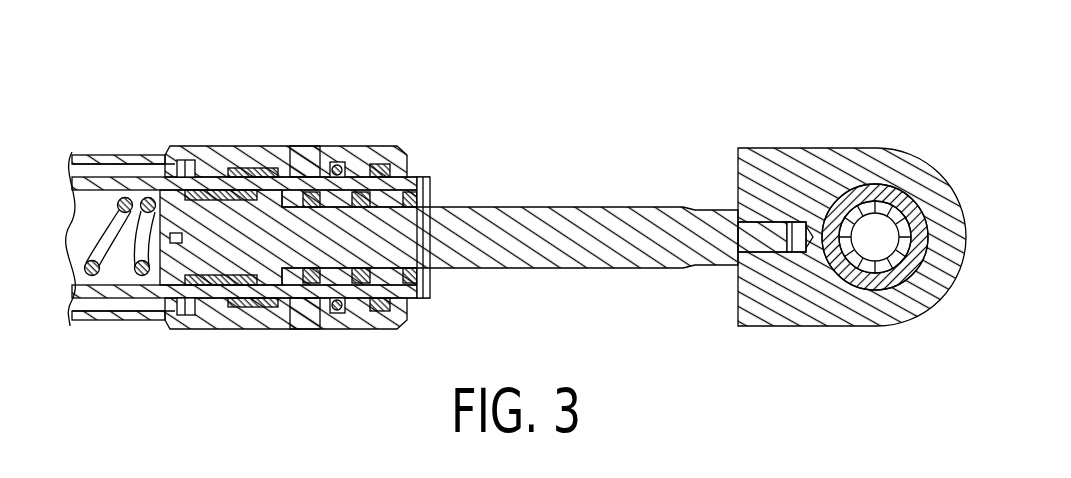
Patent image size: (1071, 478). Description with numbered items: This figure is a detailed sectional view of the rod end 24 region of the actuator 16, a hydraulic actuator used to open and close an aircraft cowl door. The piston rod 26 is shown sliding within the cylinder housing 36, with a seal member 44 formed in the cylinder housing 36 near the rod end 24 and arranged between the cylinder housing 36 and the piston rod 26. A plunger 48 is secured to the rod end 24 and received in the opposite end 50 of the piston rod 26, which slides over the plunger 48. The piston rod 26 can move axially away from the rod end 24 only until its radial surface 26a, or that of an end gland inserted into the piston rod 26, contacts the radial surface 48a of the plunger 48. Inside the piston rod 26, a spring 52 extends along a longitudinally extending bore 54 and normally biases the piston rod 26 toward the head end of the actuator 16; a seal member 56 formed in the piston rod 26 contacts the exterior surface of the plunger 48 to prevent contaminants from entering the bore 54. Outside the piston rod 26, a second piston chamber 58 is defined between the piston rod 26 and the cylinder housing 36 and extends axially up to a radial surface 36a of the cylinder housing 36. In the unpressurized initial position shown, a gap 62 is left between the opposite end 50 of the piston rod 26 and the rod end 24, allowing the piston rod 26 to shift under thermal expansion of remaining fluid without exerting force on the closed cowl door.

The actuator 16 is at (108, 114).
The rod end 24 is at (921, 140).
The piston rod 26 is at (432, 178).
The radial surface 26a is at (325, 190).
The cylinder housing 36 is at (304, 150).
The radial surface 36a is at (192, 162).
The seal member 44 is at (412, 310).
The plunger 48 is at (538, 218).
The radial surface 48a is at (258, 300).
The opposite end 50 is at (235, 178).
The spring 52 is at (103, 244).
The bore 54 is at (128, 270).
The seal member 56 is at (335, 305).
The second piston chamber 58 is at (110, 172).
The gap 62 is at (611, 292).